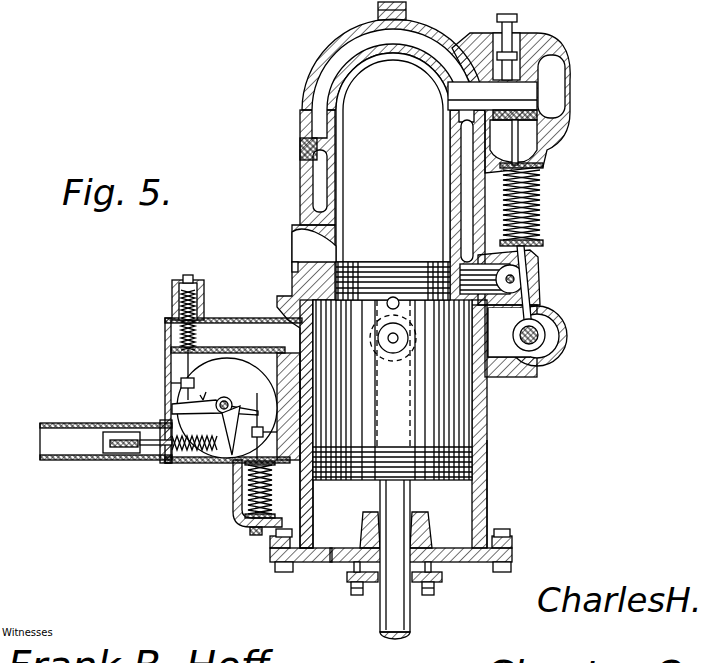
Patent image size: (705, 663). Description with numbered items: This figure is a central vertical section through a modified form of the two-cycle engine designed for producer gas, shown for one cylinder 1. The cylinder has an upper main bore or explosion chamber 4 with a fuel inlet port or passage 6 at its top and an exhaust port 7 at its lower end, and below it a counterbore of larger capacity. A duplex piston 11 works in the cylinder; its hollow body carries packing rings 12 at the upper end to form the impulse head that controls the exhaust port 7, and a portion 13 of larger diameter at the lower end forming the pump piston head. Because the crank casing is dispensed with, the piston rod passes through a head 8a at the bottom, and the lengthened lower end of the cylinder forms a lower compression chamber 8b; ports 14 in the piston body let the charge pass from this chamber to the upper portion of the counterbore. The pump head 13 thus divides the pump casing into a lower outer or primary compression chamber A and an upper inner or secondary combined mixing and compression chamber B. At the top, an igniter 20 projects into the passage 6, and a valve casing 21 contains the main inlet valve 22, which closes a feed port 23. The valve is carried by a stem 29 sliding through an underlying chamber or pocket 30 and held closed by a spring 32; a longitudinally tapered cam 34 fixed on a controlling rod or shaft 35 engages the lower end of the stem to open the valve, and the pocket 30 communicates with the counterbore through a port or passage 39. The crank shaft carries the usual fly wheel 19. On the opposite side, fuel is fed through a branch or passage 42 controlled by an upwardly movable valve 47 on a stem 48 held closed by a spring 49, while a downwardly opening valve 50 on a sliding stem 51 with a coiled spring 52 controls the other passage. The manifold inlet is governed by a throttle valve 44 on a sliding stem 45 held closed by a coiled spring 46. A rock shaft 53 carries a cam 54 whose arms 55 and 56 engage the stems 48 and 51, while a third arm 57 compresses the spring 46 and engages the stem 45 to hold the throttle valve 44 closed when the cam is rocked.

The cylinder 1 is at (300, 160).
The upper main bore or explosion chamber 4 is at (393, 157).
The fuel inlet port or passage 6 is at (455, 93).
The exhaust port 7 is at (295, 238).
The head 8a is at (325, 563).
The lower compression chamber 8b is at (488, 491).
The duplex piston 11 is at (392, 389).
The packing rings 12 is at (378, 280).
The portion of larger diameter 13 is at (373, 455).
The ports 14 is at (395, 297).
The fly wheel 19 is at (640, 2).
The igniter 20 is at (512, 42).
The valve casing 21 is at (78, 462).
The main inlet valve 22 is at (533, 108).
The feed port 23 is at (550, 120).
The stem 29 is at (530, 178).
The chamber or pocket 30 is at (537, 289).
The spring 32 is at (530, 220).
The cam 34 is at (546, 336).
The controlling rod or shaft 35 is at (543, 344).
The port or passage 39 is at (524, 273).
The branch or passage 42 is at (262, 333).
The throttle valve 44 is at (167, 462).
The sliding stem 45 is at (148, 441).
The coiled spring 46 is at (198, 456).
The valve 47 is at (196, 350).
The stem 48 is at (180, 361).
The spring 49 is at (176, 300).
The valve 50 is at (236, 494).
The sliding stem 51 is at (256, 502).
The coiled spring 52 is at (246, 528).
The rock shaft 53 is at (226, 418).
The cam 54 is at (199, 384).
The point or arm 55 is at (175, 418).
The point or arm 56 is at (229, 404).
The third arm 57 is at (260, 405).
The lower outer or primary compression chamber A is at (472, 520).
The upper inner or secondary combined mixing and compression chamber B is at (480, 409).